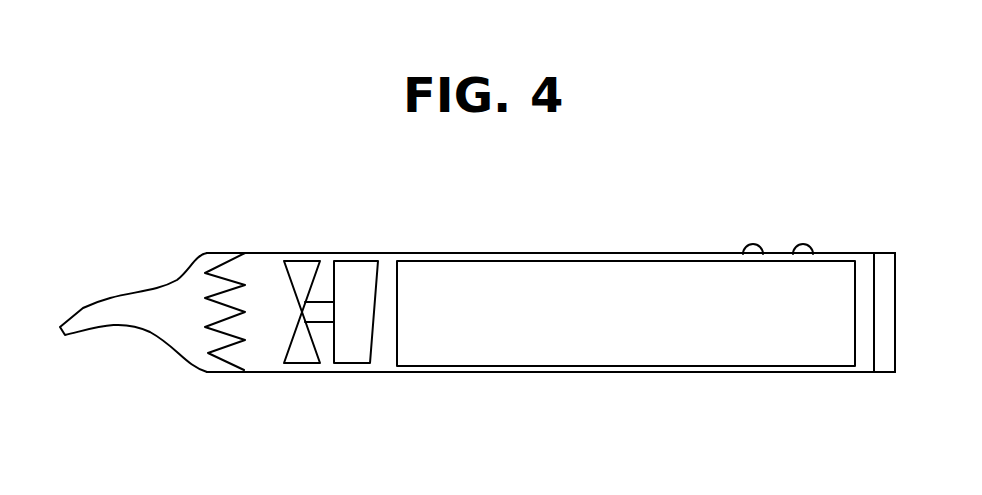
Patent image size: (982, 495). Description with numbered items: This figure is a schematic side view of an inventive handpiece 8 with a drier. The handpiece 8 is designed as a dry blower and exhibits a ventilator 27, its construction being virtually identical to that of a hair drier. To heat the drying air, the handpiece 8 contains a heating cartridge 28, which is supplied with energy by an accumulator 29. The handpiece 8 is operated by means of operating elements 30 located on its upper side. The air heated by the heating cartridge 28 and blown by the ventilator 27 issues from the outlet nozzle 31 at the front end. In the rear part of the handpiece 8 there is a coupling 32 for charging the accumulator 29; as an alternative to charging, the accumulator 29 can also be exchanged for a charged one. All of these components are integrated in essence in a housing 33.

The handpiece 8 is at (358, 252).
The ventilator 27 is at (353, 353).
The heating cartridge 28 is at (232, 353).
The accumulator 29 is at (627, 335).
The operating elements 30 is at (803, 250).
The outlet nozzle 31 is at (102, 315).
The coupling 32 is at (884, 373).
The housing 33 is at (600, 252).